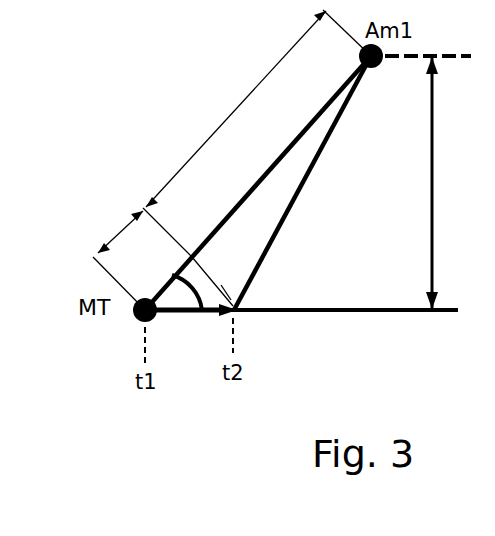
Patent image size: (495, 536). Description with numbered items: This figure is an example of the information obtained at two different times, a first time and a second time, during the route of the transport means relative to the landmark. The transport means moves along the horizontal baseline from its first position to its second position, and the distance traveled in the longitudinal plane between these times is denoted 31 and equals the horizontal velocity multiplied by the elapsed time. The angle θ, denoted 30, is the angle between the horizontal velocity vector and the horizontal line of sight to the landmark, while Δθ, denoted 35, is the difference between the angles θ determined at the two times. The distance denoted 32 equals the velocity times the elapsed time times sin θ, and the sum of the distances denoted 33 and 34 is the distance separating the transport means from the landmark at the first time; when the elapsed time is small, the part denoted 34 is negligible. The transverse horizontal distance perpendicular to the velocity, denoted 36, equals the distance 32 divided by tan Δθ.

The angle θ 30 is at (199, 312).
The distance traveled along d1 31 is at (229, 313).
The distance V·Δt·sin θ 32 is at (222, 286).
The distance to landmark at time t1 (main part) 33 is at (223, 121).
The negligible part of the distance 34 is at (118, 233).
The angle difference Δθ 35 is at (339, 101).
The transverse horizontal distance d_t 36 is at (447, 183).